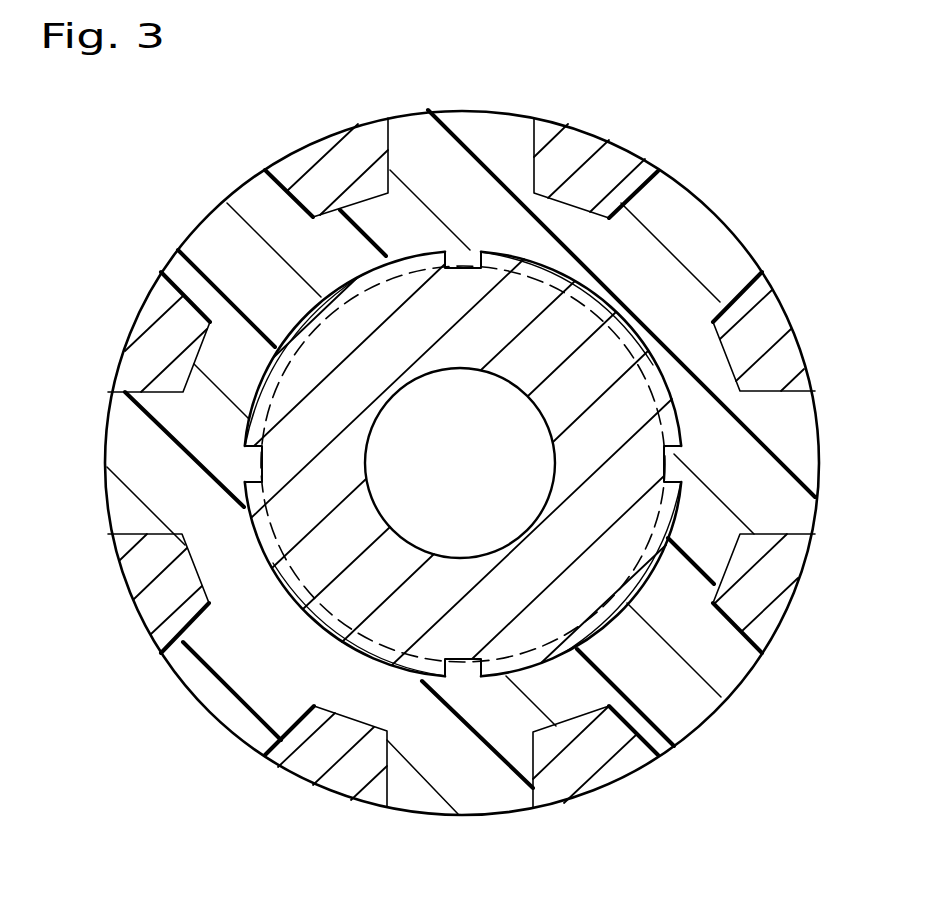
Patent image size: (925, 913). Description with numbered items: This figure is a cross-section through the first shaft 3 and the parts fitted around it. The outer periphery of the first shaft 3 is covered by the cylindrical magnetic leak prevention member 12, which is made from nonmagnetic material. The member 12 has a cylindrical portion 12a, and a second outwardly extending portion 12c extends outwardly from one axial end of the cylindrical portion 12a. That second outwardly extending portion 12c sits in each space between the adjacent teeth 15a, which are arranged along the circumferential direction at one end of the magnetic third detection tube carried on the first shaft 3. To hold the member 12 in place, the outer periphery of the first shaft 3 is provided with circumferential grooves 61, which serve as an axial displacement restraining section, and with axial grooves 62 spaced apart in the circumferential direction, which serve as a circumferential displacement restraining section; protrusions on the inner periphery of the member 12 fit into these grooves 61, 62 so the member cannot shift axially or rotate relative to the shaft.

The first shaft 3 is at (576, 322).
The magnetic leak prevention member 12 is at (417, 215).
The cylindrical portion 12a is at (267, 288).
The second outwardly extending portion 12c is at (522, 142).
The teeth 15a is at (333, 158).
The circumferential grooves 61 is at (522, 265).
The axial grooves 62 is at (467, 248).